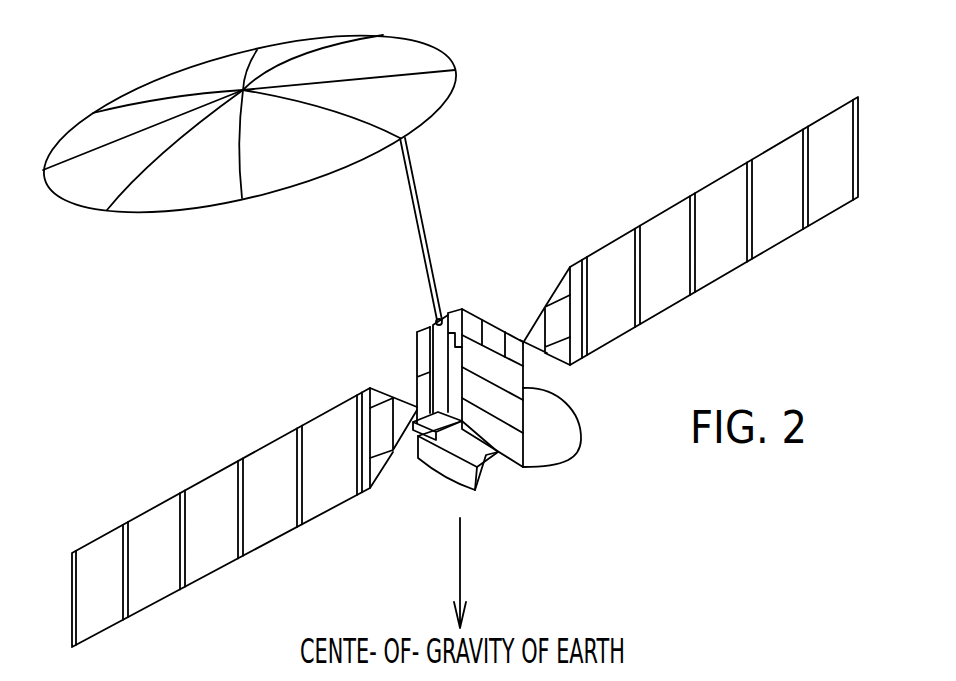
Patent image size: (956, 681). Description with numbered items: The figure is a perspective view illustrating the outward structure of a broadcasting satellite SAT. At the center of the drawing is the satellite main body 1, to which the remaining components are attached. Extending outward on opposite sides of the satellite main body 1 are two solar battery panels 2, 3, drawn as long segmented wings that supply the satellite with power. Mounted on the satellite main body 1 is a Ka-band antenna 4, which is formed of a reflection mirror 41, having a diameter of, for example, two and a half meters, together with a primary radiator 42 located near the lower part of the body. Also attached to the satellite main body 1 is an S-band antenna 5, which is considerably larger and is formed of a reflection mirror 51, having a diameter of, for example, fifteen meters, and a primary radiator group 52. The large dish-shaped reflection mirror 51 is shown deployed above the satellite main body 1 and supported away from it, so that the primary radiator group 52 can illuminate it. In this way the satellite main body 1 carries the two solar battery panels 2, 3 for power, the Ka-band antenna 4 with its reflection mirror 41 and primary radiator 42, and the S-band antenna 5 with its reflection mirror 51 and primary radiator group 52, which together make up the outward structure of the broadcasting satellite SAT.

The broadcasting satellite SAT is at (472, 182).
The satellite main body 1 is at (455, 308).
The solar battery panel 2 is at (165, 502).
The solar battery panel 3 is at (627, 233).
The Ka-band antenna 4 is at (625, 511).
The reflection mirror 41 is at (582, 448).
The primary radiator 42 is at (498, 455).
The S-band antenna 5 is at (272, 267).
The reflection mirror 51 is at (282, 192).
The primary radiator group 52 is at (416, 420).